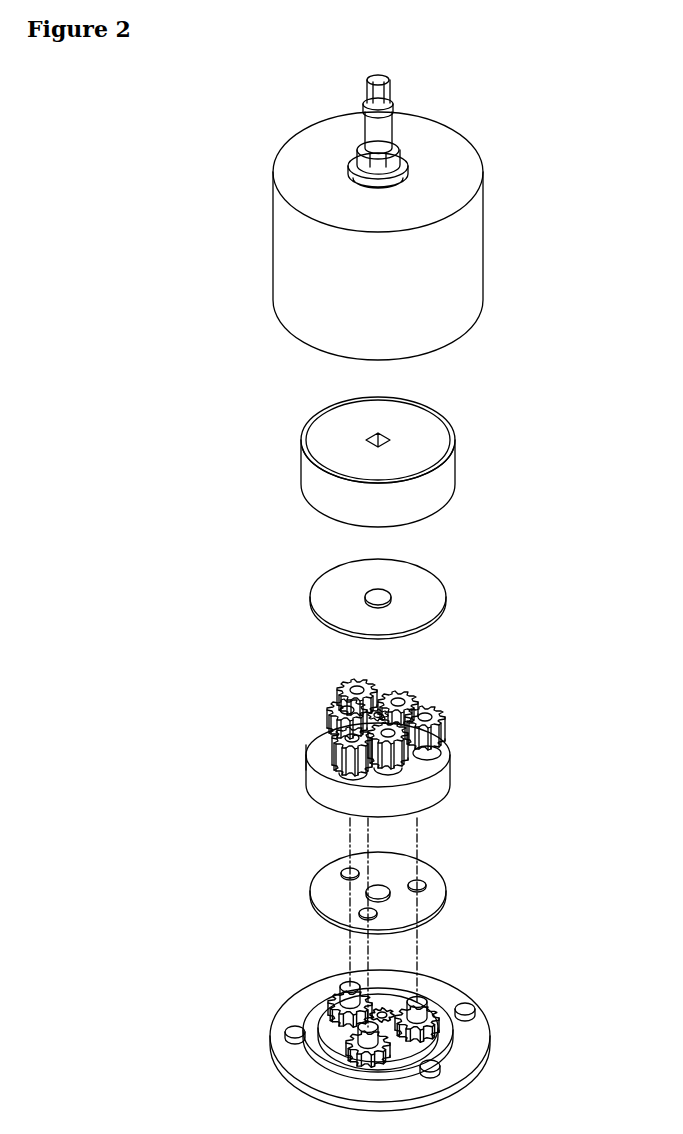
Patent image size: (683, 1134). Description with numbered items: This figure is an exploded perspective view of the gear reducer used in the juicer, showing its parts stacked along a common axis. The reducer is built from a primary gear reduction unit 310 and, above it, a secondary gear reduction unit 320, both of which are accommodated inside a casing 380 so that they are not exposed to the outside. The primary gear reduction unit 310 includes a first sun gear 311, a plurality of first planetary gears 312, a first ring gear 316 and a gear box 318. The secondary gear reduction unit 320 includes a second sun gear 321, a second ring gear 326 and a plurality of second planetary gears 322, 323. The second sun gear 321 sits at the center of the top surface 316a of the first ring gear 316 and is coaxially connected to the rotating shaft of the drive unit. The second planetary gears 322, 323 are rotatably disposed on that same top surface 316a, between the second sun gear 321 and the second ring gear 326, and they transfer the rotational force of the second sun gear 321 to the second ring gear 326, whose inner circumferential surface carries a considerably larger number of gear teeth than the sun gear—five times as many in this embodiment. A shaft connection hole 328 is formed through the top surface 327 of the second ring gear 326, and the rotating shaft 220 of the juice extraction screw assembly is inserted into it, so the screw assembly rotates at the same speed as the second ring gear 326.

The rotating shaft 220 is at (390, 90).
The casing 380 is at (457, 268).
The second ring gear 326 is at (394, 451).
The top surface 327 is at (335, 447).
The shaft connection hole 328 is at (370, 437).
The secondary gear reduction unit 320 is at (551, 501).
The second sun gear 321 is at (384, 698).
The second planetary gear 322 is at (440, 712).
The second planetary gear 323 is at (410, 696).
The first ring gear 316 is at (388, 770).
The top surface 316a is at (303, 745).
The primary gear reduction unit 310 is at (551, 803).
The first sun gear 311 is at (400, 984).
The first planetary gear 312 is at (445, 1012).
The gear box 318 is at (475, 1036).